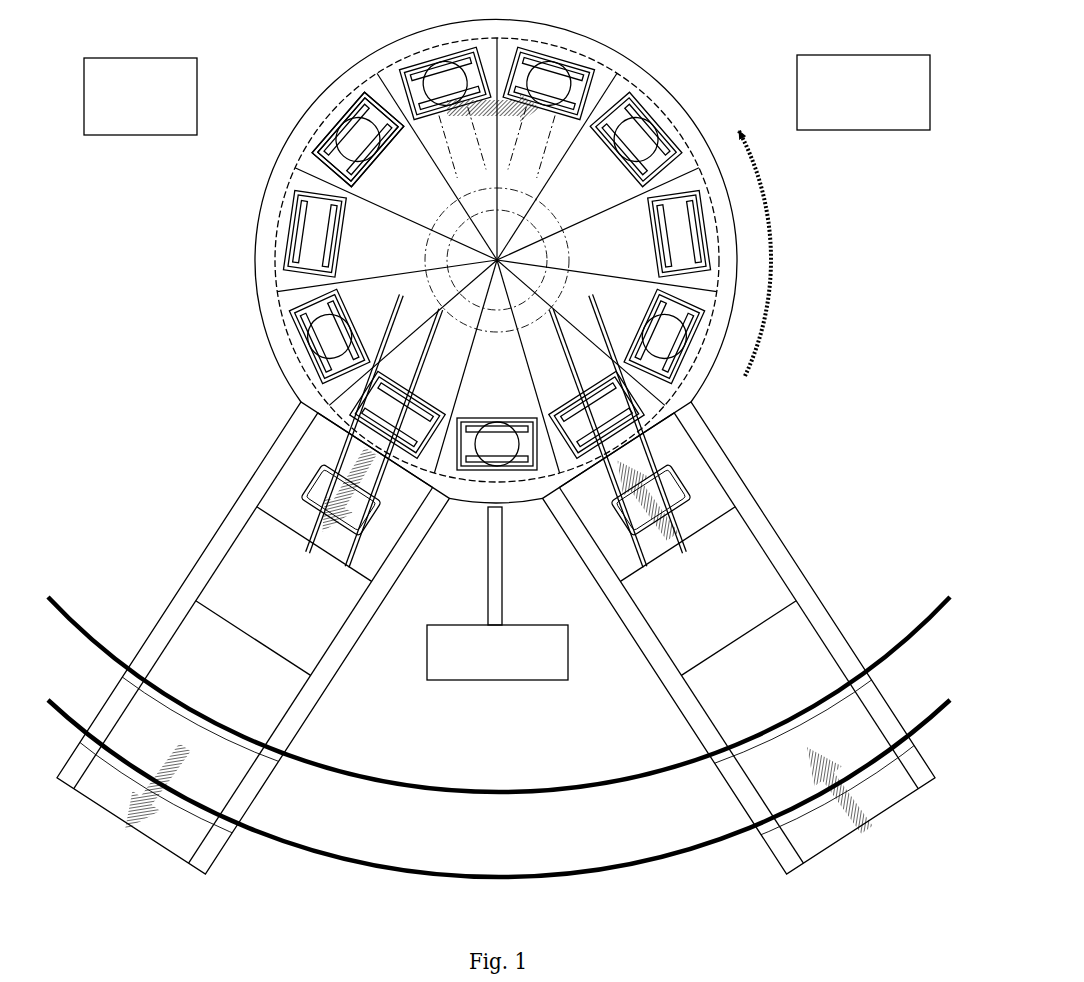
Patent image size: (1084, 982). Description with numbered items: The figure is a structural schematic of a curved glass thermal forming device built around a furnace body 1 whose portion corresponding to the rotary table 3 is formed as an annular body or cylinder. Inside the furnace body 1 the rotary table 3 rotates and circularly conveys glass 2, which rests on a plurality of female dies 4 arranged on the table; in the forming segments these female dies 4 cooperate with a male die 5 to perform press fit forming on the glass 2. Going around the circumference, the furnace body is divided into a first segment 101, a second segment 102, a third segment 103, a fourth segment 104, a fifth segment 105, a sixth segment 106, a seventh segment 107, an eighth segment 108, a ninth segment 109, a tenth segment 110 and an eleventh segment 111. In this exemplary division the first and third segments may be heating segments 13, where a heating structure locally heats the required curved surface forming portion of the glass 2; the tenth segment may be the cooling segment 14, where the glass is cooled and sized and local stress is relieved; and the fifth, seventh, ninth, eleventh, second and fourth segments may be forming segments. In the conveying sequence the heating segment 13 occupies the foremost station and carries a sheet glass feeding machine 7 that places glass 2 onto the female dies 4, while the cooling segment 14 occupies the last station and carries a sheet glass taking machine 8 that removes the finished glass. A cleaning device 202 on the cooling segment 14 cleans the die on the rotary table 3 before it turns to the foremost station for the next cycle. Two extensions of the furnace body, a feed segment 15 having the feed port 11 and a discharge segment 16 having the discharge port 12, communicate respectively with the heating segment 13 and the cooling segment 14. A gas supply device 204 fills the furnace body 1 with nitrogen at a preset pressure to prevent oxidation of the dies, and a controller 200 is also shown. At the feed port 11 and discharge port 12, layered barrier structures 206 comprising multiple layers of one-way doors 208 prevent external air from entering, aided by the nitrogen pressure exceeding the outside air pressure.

The furnace body 1 is at (668, 84).
The glass 2 is at (684, 468).
The rotary table 3 is at (280, 214).
The female die 4 is at (312, 148).
The male die 5 is at (350, 117).
The sheet glass feeding machine 7 is at (606, 478).
The sheet glass taking machine 8 is at (385, 488).
The feed port 11 is at (899, 805).
The discharge port 12 is at (163, 850).
The heating segment 13 is at (658, 402).
The cooling segment 14 is at (348, 397).
The feed segment 15 is at (781, 555).
The discharge segment 16 is at (342, 640).
The first segment 101 is at (590, 401).
The second segment 102 is at (635, 335).
The third segment 103 is at (646, 234).
The fourth segment 104 is at (617, 145).
The fifth segment 105 is at (539, 116).
The sixth segment 106 is at (454, 116).
The seventh segment 107 is at (381, 145).
The eighth segment 108 is at (350, 234).
The ninth segment 109 is at (354, 331).
The tenth segment 110 is at (406, 395).
The eleventh segment 111 is at (497, 409).
The controller 200 is at (863, 92).
The cleaning device 202 is at (497, 593).
The gas supply device 204 is at (140, 96).
The layered barrier structure 206 is at (499, 737).
The one-way door 208 is at (499, 750).